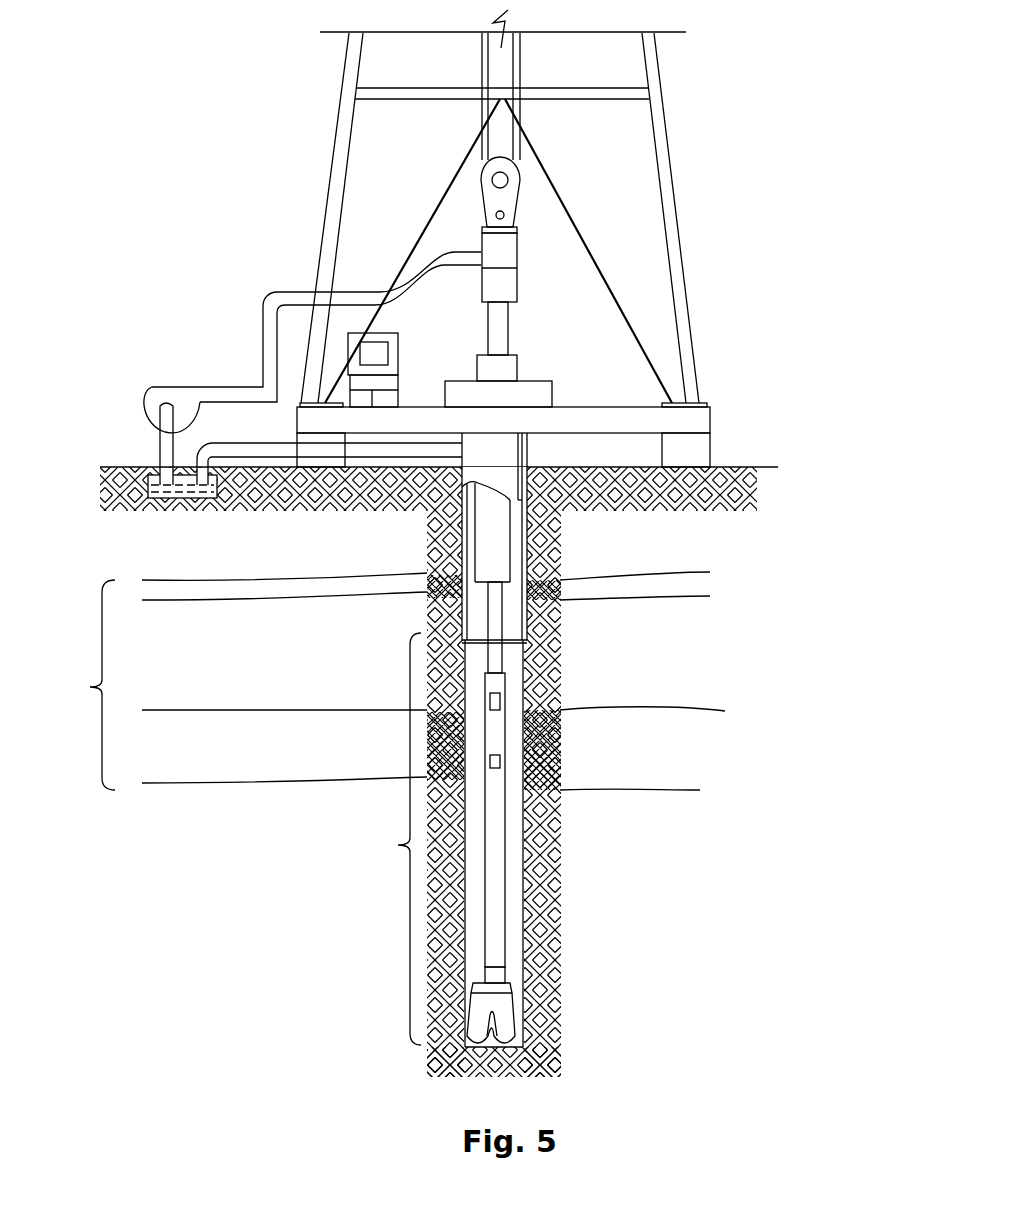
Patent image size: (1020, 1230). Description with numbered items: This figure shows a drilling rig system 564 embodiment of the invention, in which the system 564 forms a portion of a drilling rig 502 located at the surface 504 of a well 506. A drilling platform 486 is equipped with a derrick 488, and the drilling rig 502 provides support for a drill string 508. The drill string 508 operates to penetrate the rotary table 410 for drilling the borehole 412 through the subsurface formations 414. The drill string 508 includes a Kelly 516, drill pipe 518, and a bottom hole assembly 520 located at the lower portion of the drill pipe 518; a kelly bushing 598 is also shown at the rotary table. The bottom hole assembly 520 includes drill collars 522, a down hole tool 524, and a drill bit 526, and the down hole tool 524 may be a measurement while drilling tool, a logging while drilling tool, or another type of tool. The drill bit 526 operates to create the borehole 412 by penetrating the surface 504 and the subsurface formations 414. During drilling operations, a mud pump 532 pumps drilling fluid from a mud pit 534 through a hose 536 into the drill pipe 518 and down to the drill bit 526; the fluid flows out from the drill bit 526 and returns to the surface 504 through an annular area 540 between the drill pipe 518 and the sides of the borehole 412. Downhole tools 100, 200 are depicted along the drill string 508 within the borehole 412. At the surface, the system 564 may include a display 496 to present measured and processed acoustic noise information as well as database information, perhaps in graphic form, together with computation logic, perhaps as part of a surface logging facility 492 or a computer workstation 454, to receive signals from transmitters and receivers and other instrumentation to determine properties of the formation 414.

The drilling rig system 564 is at (255, 153).
The derrick 488 is at (665, 117).
The drilling rig 502 is at (685, 240).
The hose 536 is at (273, 293).
The mud pump 532 is at (173, 385).
The surface logging facility 492 is at (413, 343).
The computer workstation 454 is at (400, 357).
The display 496 is at (388, 356).
The rotary table 410 is at (460, 383).
The Kelly 516 is at (508, 320).
The kelly bushing 598 is at (517, 368).
The drilling platform 486 is at (710, 410).
The surface 504 is at (733, 467).
The well 506 is at (533, 465).
The mud pit 534 is at (170, 497).
The drill collars 522 is at (510, 543).
The drill pipe 518 is at (500, 612).
The annular area 540 is at (516, 678).
The downhole tool 100 is at (595, 759).
The downhole tool 200 is at (501, 703).
The drill string 508 is at (583, 845).
The borehole 412 is at (520, 920).
The down hole tool 524 is at (493, 950).
The drill bit 526 is at (500, 1005).
The subsurface formations 414 is at (382, 681).
The bottom hole assembly 520 is at (382, 772).